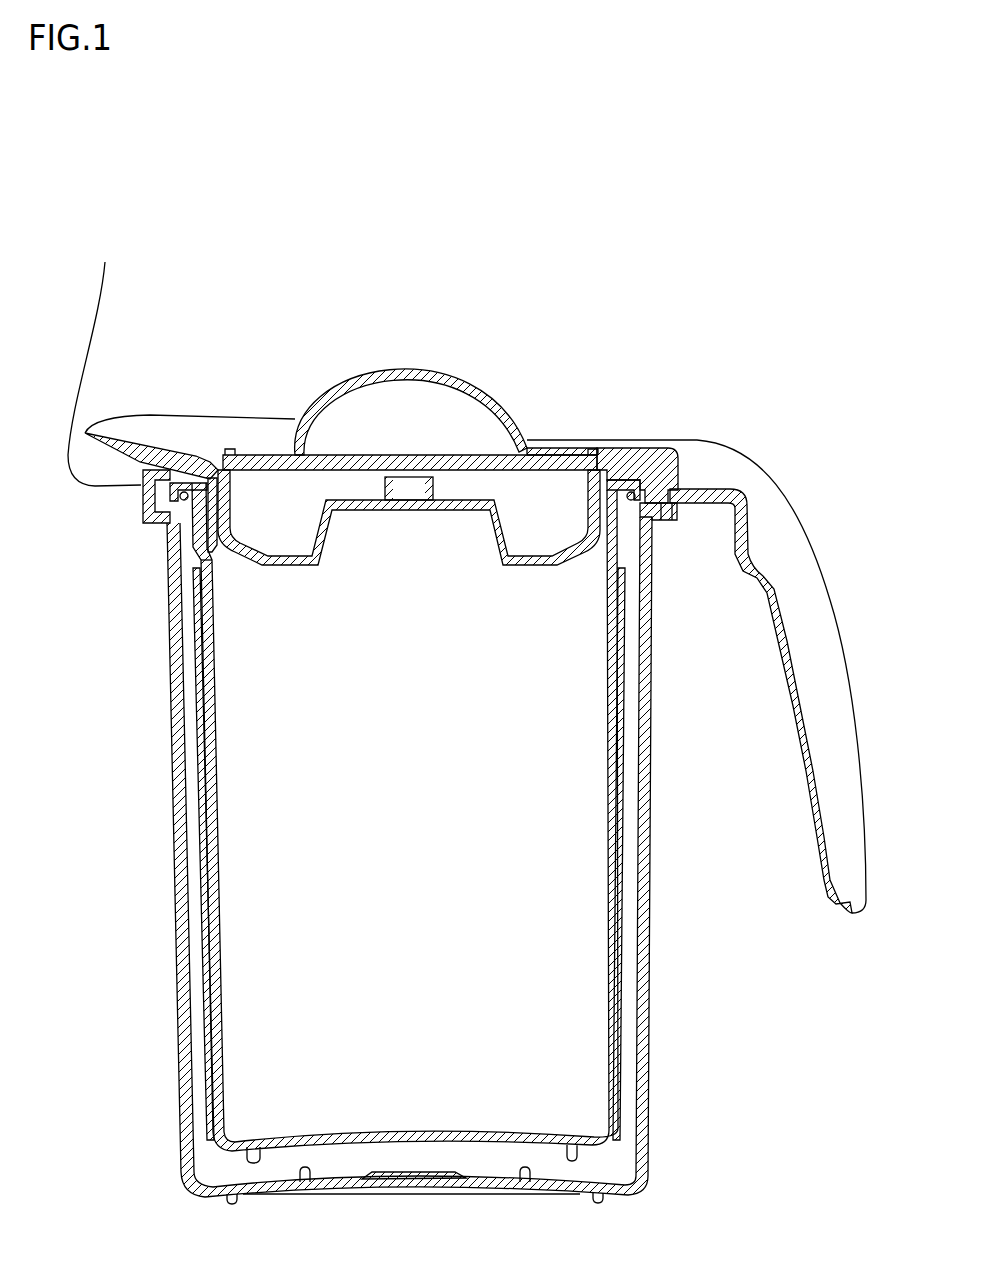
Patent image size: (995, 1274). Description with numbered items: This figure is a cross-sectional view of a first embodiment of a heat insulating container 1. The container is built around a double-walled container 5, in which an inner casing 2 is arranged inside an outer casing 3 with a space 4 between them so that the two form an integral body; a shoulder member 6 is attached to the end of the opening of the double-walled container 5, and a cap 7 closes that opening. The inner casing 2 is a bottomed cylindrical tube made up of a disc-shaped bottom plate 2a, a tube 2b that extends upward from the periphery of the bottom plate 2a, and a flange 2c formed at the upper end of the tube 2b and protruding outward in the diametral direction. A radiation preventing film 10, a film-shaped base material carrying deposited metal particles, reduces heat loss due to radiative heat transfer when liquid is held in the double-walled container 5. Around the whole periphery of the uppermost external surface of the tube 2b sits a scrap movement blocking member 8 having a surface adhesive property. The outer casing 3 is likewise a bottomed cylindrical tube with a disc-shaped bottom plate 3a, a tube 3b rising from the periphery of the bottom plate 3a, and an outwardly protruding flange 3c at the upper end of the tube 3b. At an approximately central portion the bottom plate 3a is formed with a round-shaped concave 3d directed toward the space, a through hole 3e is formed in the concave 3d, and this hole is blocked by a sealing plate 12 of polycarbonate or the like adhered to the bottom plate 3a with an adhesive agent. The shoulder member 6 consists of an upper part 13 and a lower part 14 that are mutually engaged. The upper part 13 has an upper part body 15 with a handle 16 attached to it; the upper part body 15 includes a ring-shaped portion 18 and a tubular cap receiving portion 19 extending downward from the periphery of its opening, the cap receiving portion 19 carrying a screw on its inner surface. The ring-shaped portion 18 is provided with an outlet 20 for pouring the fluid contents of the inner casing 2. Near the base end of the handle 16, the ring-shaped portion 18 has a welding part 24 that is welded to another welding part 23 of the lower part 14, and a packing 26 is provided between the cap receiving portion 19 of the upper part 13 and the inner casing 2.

The heat insulating container 1 is at (748, 388).
The inner casing 2 is at (210, 831).
The bottom plate 2a is at (497, 1146).
The tube 2b is at (603, 930).
The flange 2c is at (167, 492).
The outer casing 3 is at (180, 788).
The bottom plate 3a is at (470, 1197).
The tube 3b is at (650, 965).
The flange 3c is at (168, 498).
The round-shaped concave 3d is at (413, 1195).
The through hole 3e is at (415, 1173).
The space 4 is at (192, 980).
The double-walled container 5 is at (116, 777).
The shoulder member 6 is at (507, 227).
The cap 7 is at (447, 412).
The scrap movement blocking member 8 is at (183, 499).
The radiation preventing film 10 is at (196, 663).
The sealing plate 12 is at (388, 1195).
The upper part 13 is at (708, 299).
The lower part 14 is at (678, 588).
The upper part body 15 is at (276, 410).
The handle 16 is at (713, 450).
The ring-shaped portion 18 is at (625, 440).
The cap receiving portion 19 is at (605, 537).
The outlet 20 is at (173, 430).
The welding part 23 is at (662, 517).
The welding part 24 is at (673, 517).
The packing 26 is at (214, 561).